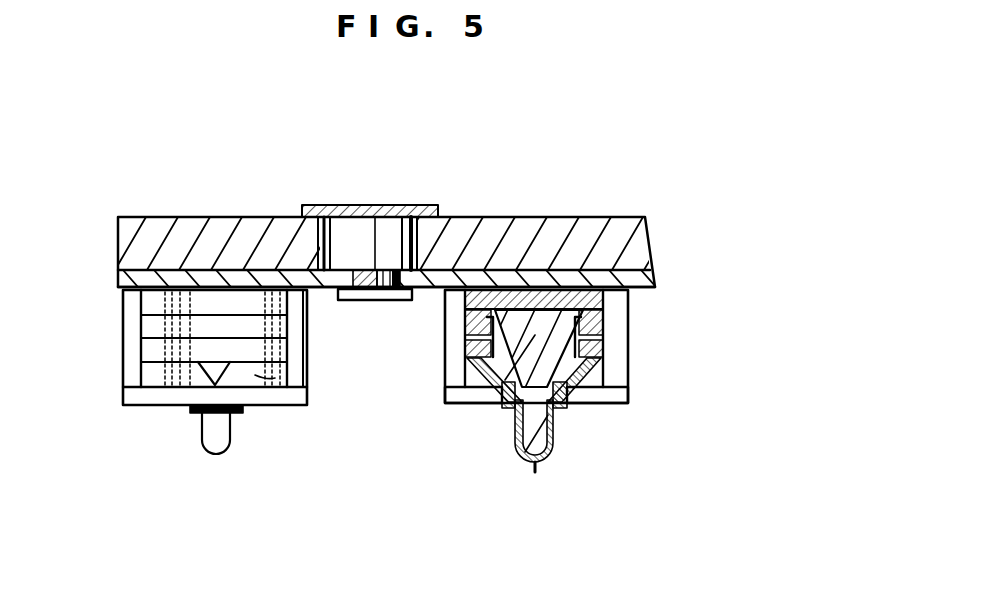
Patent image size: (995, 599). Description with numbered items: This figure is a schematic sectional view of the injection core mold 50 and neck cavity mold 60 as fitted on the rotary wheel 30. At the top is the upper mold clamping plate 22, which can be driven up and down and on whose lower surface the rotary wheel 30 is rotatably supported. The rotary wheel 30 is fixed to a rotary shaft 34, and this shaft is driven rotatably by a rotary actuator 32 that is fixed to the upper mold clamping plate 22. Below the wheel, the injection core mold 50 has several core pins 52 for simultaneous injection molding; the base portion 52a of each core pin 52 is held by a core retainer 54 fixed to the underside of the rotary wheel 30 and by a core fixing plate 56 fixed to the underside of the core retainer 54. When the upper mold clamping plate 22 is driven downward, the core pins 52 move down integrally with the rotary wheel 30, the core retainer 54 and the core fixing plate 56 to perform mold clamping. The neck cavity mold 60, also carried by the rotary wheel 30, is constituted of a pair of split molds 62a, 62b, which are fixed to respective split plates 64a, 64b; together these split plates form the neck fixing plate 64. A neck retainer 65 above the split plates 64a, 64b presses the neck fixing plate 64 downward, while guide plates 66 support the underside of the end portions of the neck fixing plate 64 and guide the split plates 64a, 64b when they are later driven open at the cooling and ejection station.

The upper mold clamping plate 22 is at (607, 250).
The rotary wheel 30 is at (123, 284).
The rotary actuator 32 is at (357, 235).
The rotary shaft 34 is at (365, 300).
The injection core mold 50 is at (123, 435).
The core pin 52 is at (217, 460).
The base portion 52a is at (592, 338).
The core retainer 54 is at (150, 300).
The core fixing plate 56 is at (152, 328).
The neck cavity mold 60 is at (190, 411).
The split mold 62a is at (568, 400).
The split mold 62b is at (500, 402).
The neck fixing plate 64 is at (283, 393).
The split plate 64a is at (600, 385).
The split plate 64b is at (475, 378).
The neck retainer 65 is at (152, 348).
The guide plate 66 is at (268, 402).